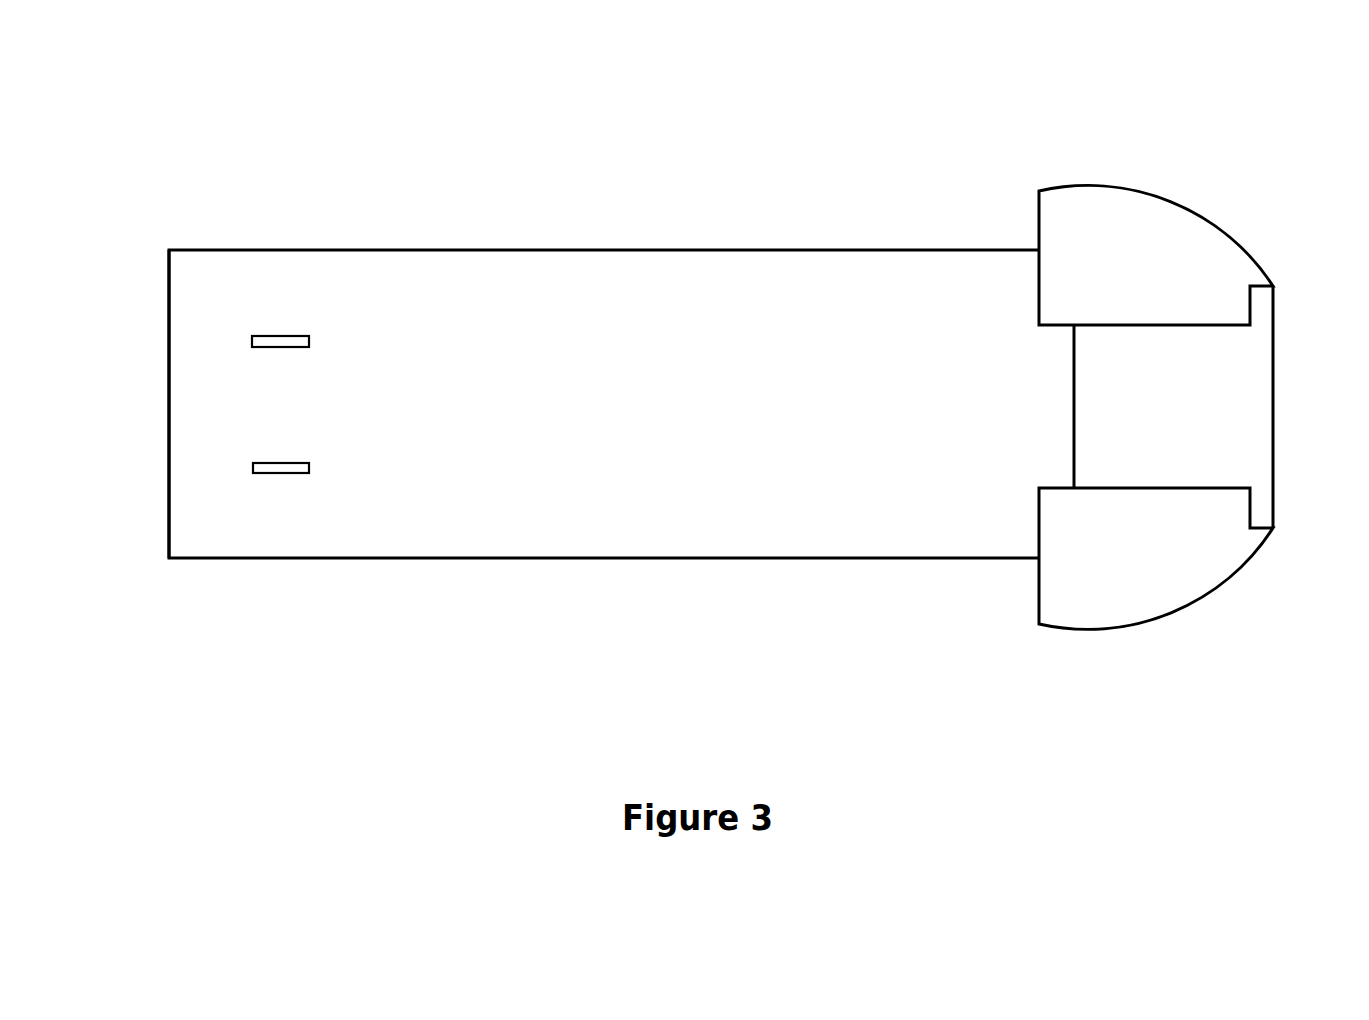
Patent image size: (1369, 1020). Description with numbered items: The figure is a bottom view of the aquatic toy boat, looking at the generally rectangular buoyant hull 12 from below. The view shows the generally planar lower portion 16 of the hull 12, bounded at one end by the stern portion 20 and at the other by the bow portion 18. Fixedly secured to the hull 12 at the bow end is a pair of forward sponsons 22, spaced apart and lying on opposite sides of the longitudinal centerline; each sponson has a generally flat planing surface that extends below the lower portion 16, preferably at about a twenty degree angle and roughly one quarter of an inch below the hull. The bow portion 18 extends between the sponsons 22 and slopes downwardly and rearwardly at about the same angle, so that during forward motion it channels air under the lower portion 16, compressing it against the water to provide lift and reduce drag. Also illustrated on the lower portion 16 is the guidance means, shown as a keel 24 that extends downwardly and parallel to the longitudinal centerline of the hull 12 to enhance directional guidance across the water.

The buoyant hull 12 is at (456, 250).
The lower portion 16 is at (714, 335).
The bow portion 18 is at (1273, 402).
The stern portion 20 is at (168, 369).
The forward sponsons 22 is at (1130, 243).
The keel 24 is at (281, 336).